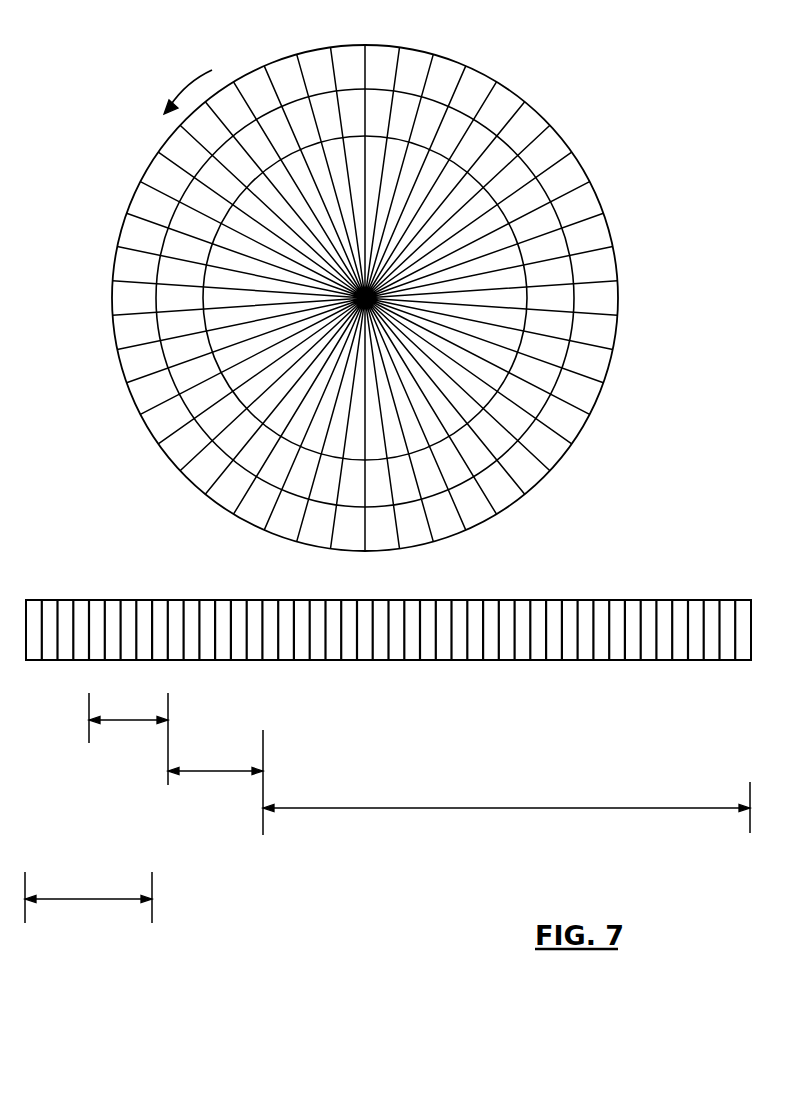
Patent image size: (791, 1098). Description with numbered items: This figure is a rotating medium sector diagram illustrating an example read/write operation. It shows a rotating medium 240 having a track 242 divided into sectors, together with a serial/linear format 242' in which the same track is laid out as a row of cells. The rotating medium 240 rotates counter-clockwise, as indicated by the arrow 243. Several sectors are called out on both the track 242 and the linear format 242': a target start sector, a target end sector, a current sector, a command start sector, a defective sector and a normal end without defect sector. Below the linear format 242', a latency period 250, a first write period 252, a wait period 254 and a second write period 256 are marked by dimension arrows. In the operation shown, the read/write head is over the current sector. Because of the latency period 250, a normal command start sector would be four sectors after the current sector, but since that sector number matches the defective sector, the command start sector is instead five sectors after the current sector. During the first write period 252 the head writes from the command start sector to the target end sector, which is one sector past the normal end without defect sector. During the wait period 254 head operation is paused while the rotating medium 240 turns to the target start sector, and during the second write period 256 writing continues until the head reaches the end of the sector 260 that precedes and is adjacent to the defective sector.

The rotating medium 240 is at (453, 55).
The track 242 is at (365, 298).
The arrow 243 is at (200, 72).
The sector 260 is at (143, 612).
The serial/linear format 242' is at (388, 614).
The latency period 250 is at (128, 739).
The first write period 252 is at (215, 782).
The wait period 254 is at (506, 807).
The second write period 256 is at (88, 897).